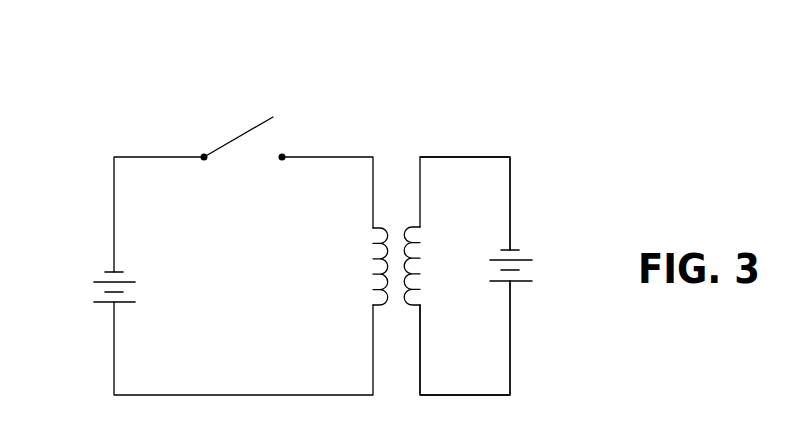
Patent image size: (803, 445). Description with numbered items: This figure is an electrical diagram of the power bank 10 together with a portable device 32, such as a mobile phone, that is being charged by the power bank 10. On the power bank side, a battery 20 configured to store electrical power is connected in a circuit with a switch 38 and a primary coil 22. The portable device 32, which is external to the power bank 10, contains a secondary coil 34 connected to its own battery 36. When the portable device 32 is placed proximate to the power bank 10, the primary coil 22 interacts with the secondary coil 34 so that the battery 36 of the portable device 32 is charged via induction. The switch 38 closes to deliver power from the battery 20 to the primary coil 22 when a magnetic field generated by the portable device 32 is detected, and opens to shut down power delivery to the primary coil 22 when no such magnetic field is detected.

The power bank 10 is at (216, 83).
The battery 20 is at (108, 305).
The primary coil 22 is at (377, 272).
The portable device 32 is at (512, 134).
The secondary coil 34 is at (417, 258).
The battery 36 is at (523, 260).
The switch 38 is at (248, 128).